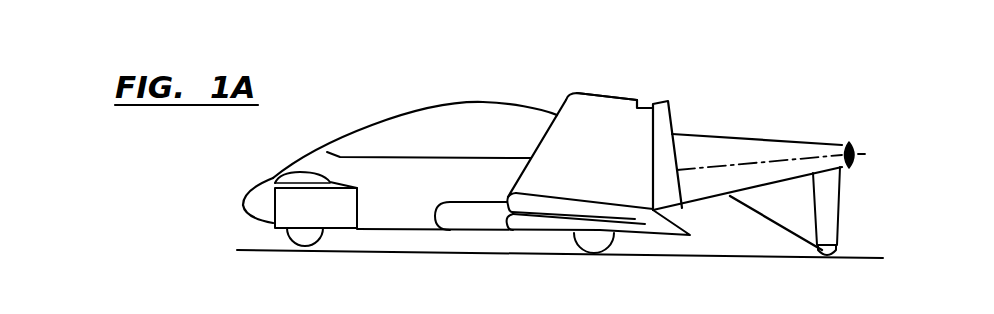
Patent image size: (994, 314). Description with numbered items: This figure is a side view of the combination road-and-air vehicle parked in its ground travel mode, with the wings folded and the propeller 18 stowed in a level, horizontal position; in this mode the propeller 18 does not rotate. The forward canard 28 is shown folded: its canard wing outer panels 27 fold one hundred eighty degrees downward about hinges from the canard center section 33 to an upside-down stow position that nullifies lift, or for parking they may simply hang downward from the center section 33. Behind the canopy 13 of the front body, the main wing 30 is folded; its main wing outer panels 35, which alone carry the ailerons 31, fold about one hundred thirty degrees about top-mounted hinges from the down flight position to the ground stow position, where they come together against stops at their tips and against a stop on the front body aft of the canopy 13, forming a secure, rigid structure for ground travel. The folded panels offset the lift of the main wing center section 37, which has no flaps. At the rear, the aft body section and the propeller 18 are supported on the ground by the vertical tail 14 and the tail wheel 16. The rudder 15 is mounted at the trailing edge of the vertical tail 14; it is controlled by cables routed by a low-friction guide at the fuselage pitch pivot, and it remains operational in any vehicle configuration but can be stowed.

The canopy 13 is at (400, 130).
The vertical tail 14 is at (777, 221).
The rudder 15 is at (830, 197).
The tail wheel 16 is at (832, 257).
The propeller 18 is at (852, 142).
The canard wing outer panels 27 is at (285, 220).
The canard 28 is at (363, 183).
The main wing 30 is at (610, 93).
The ailerons 31 is at (668, 102).
The center section 33 is at (290, 182).
The main wing outer panels 35 is at (580, 145).
The main wing center section 37 is at (590, 225).